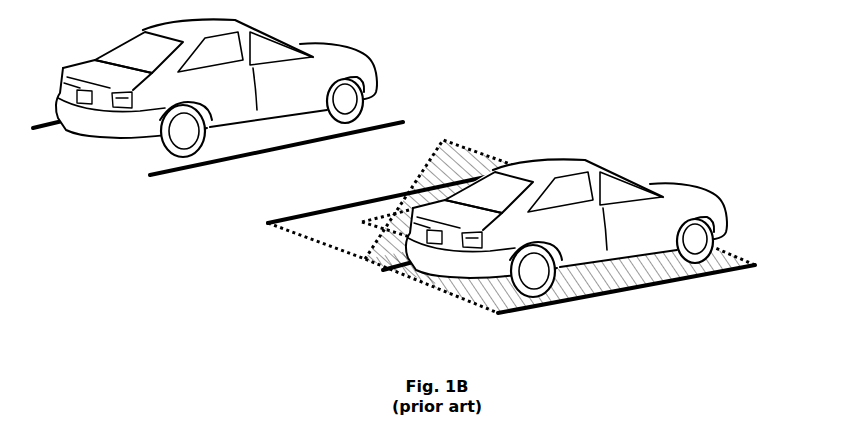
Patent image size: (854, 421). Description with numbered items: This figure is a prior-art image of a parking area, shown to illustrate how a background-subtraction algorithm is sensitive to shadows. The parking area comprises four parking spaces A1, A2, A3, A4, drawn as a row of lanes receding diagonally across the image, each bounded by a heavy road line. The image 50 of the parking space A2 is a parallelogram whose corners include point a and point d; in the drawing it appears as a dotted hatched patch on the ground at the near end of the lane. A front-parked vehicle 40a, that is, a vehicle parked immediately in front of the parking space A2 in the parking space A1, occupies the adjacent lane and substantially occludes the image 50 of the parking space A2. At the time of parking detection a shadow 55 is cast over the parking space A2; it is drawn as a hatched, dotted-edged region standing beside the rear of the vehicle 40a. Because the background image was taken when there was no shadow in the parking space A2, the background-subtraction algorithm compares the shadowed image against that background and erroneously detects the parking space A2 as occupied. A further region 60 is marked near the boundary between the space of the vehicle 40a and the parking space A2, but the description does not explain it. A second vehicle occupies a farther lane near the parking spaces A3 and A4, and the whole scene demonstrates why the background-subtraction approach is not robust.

The front-parked vehicle 40a is at (566, 228).
The image of the parking space 50 is at (360, 253).
The shadow 55 is at (470, 155).
The sensor detection zone 60 is at (387, 217).
The parking space A1 is at (578, 289).
The parking space A2 is at (381, 218).
The parking space A3 is at (276, 168).
The parking space A4 is at (54, 142).
The point a is at (261, 221).
The point d is at (391, 277).